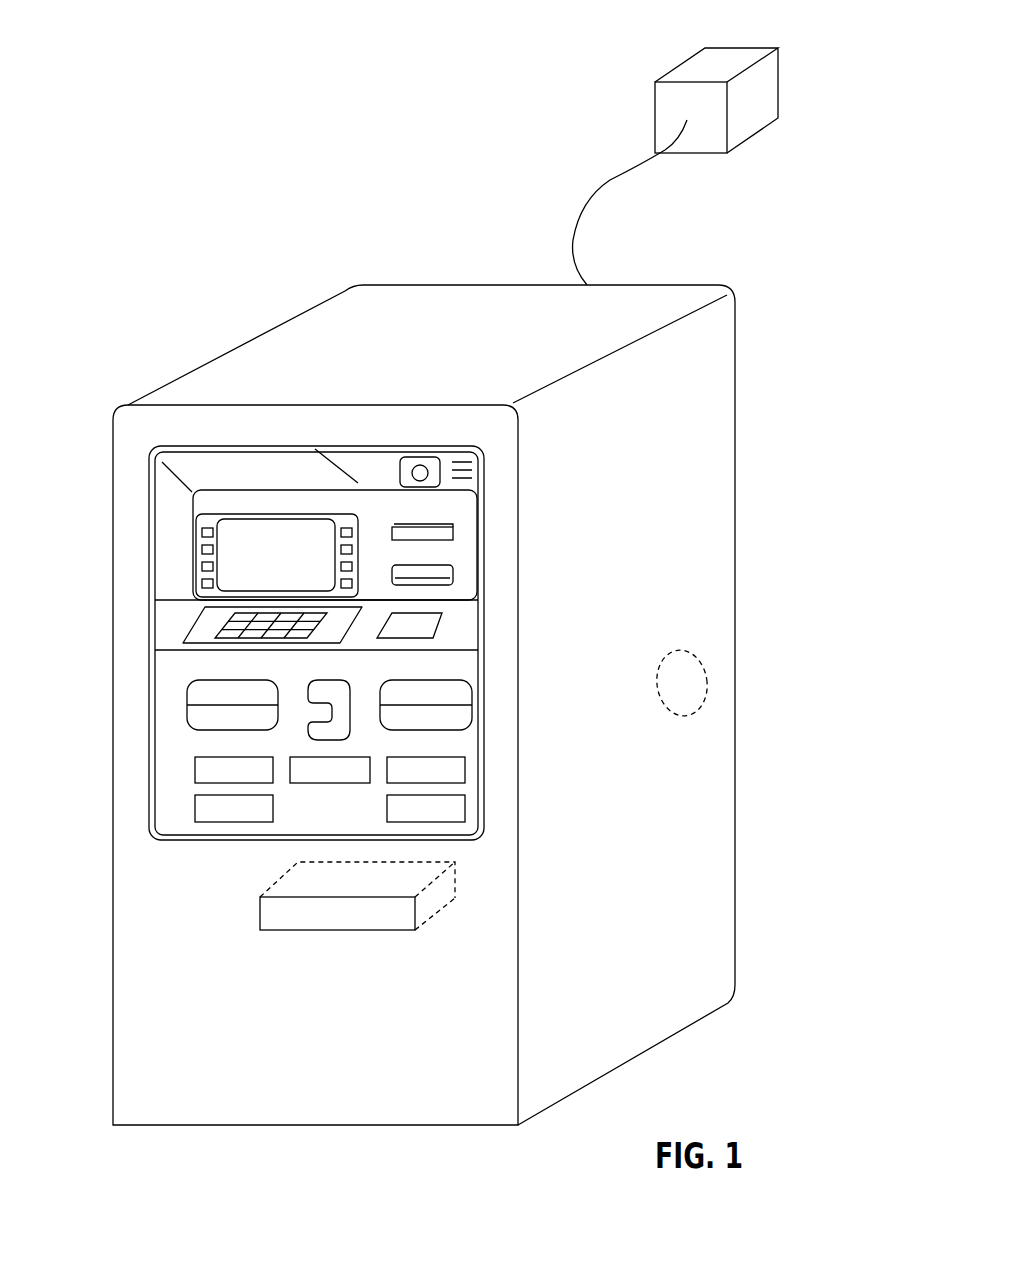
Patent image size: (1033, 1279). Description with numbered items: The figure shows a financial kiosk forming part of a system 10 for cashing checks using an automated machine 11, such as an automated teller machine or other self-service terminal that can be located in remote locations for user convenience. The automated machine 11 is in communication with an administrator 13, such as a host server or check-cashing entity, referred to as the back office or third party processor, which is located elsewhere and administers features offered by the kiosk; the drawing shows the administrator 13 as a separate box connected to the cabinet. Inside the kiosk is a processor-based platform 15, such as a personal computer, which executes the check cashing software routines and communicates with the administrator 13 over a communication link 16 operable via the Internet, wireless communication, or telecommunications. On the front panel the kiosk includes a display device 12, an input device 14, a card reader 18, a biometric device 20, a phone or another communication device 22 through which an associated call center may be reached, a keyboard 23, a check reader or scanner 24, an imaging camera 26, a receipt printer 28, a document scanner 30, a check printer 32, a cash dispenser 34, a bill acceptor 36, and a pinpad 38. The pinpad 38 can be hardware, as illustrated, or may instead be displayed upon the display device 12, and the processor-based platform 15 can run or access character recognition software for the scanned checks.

The system 10 is at (437, 658).
The automated machine 11 is at (703, 930).
The display device 12 is at (239, 518).
The administrator 13 is at (723, 57).
The input device 14 is at (190, 727).
The processor-based platform 15 is at (278, 915).
The communication link 16 is at (695, 687).
The card reader 18 is at (453, 524).
The biometric device 20 is at (470, 713).
The phone or another communication device 22 is at (340, 680).
The keyboard 23 is at (230, 622).
The check reader or scanner 24 is at (453, 573).
The imaging camera 26 is at (420, 460).
The receipt printer 28 is at (197, 766).
The document scanner 30 is at (452, 772).
The check printer 32 is at (207, 810).
The cash dispenser 34 is at (452, 812).
The bill acceptor 36 is at (320, 776).
The pinpad 38 is at (420, 625).